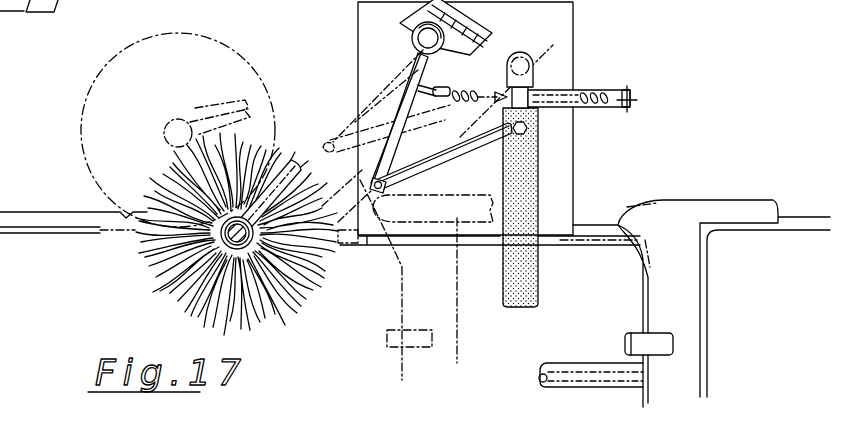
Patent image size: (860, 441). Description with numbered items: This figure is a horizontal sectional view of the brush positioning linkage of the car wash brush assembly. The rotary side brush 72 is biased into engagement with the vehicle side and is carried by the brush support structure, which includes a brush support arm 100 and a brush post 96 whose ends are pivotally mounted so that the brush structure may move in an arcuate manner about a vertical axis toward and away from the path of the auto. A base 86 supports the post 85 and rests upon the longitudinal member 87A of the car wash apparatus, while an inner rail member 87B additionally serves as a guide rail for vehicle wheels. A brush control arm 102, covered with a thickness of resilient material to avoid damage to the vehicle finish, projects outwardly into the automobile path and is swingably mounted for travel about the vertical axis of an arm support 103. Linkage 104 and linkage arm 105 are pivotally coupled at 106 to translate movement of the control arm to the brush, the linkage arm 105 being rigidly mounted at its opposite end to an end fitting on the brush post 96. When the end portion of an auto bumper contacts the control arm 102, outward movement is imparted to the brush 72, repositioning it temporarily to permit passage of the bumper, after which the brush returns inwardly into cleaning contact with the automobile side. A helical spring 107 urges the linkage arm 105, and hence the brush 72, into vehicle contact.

The brush 72 is at (88, 168).
The post 85 is at (494, 27).
The base 86 is at (573, 152).
The longitudinal member 87A is at (592, 238).
The inner rail member 87B is at (580, 363).
The post 96 is at (407, 29).
The brush support arm 100 is at (327, 139).
The brush control arm 102 is at (525, 200).
The arm support 103 is at (529, 62).
The linkage 104 is at (452, 156).
The linkage arm 105 is at (348, 122).
The pivotal coupling 106 is at (412, 182).
The helical spring 107 is at (555, 90).